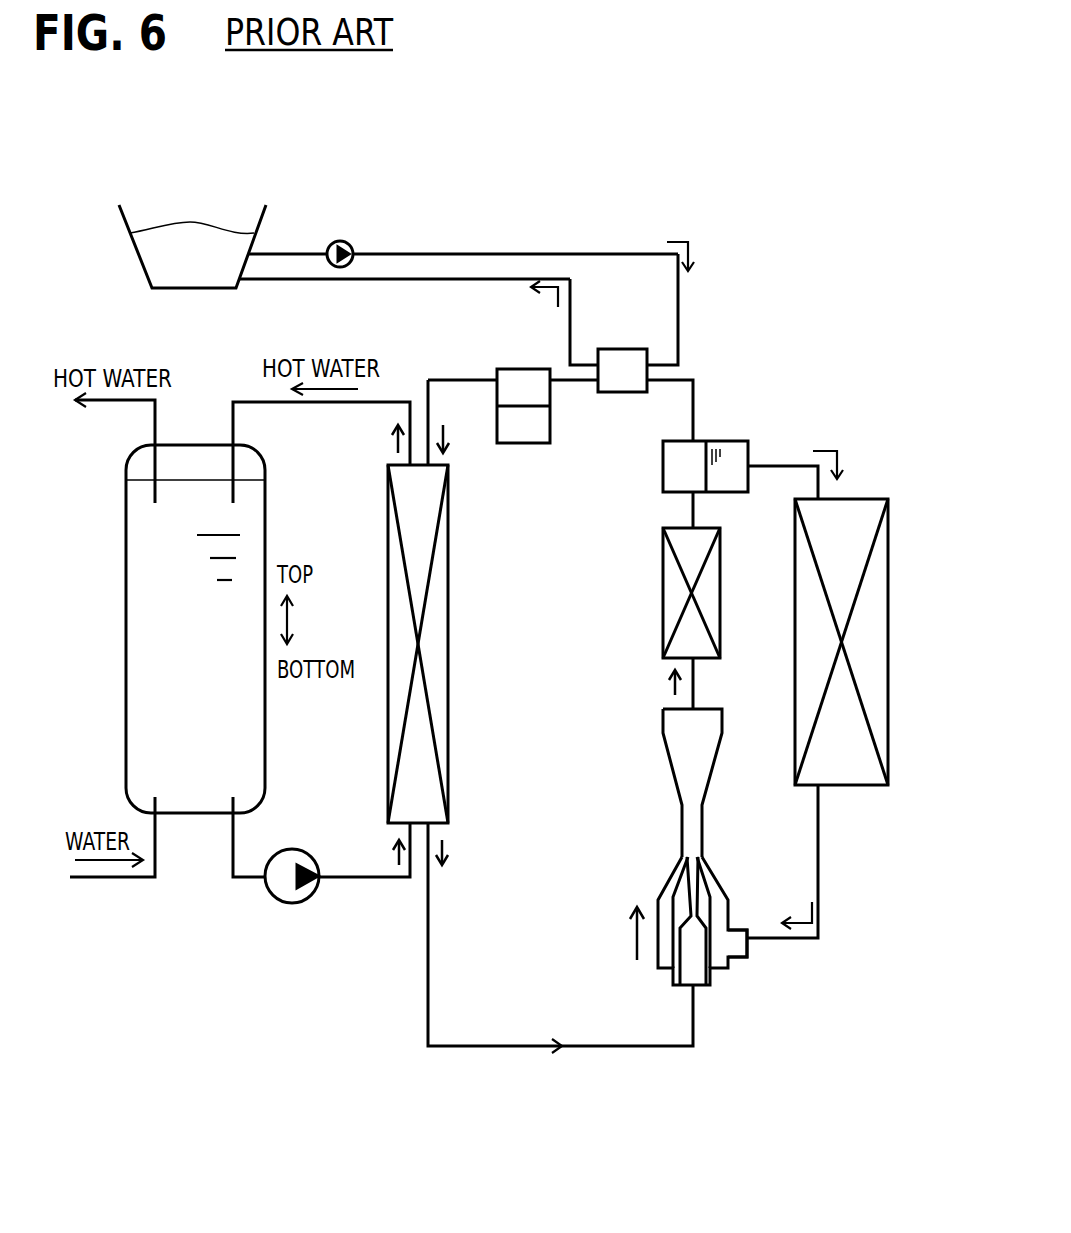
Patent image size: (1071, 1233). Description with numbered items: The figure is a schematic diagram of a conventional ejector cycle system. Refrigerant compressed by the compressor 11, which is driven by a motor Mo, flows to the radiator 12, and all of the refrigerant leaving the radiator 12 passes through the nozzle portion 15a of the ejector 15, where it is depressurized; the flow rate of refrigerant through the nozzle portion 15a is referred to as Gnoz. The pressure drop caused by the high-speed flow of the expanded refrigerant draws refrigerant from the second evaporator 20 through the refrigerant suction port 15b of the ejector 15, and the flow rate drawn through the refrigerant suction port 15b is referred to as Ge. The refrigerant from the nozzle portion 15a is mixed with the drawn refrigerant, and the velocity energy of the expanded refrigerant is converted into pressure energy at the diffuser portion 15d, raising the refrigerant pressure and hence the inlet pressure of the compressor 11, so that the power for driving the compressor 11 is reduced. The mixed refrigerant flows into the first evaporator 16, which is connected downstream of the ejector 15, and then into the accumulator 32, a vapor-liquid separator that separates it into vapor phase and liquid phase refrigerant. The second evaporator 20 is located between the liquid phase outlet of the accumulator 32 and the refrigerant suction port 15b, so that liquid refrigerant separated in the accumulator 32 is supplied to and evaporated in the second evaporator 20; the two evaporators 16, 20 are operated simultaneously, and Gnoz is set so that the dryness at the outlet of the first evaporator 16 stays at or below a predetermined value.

The compressor 11 is at (503, 368).
The motor Mo is at (513, 443).
The accumulator 32 is at (663, 465).
The flow rate of refrigerant drawn through the refrigerant suction port Ge is at (840, 455).
The radiator 12 is at (448, 638).
The first evaporator 16 is at (663, 596).
The second evaporator 20 is at (795, 682).
The ejector 15 is at (697, 851).
The diffuser portion 15d is at (688, 742).
The nozzle portion 15a is at (680, 912).
The refrigerant suction port 15b is at (747, 950).
The flow rate of refrigerant passing through the nozzle portion Gnoz is at (628, 933).